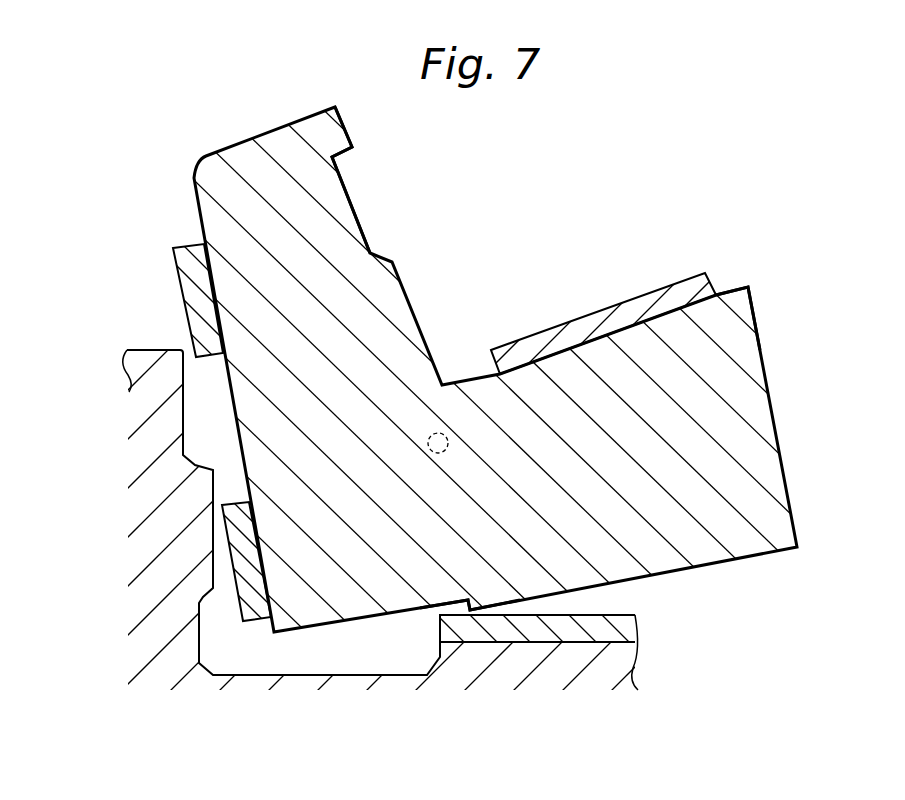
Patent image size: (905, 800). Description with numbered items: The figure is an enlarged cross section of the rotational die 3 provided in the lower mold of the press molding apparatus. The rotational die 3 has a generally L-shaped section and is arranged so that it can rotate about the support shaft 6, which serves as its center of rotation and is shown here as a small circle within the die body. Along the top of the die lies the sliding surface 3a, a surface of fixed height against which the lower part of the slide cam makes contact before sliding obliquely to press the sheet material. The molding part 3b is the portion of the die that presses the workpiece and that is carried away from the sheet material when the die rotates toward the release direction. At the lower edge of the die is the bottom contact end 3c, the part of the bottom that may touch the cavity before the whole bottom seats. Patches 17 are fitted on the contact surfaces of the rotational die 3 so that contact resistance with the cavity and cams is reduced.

The rotational die 3 is at (255, 162).
The sliding surface 3a is at (730, 287).
The molding part 3b is at (333, 170).
The bottom contact end 3c is at (466, 602).
The support shaft 6 is at (447, 434).
The patches 17 is at (188, 287).